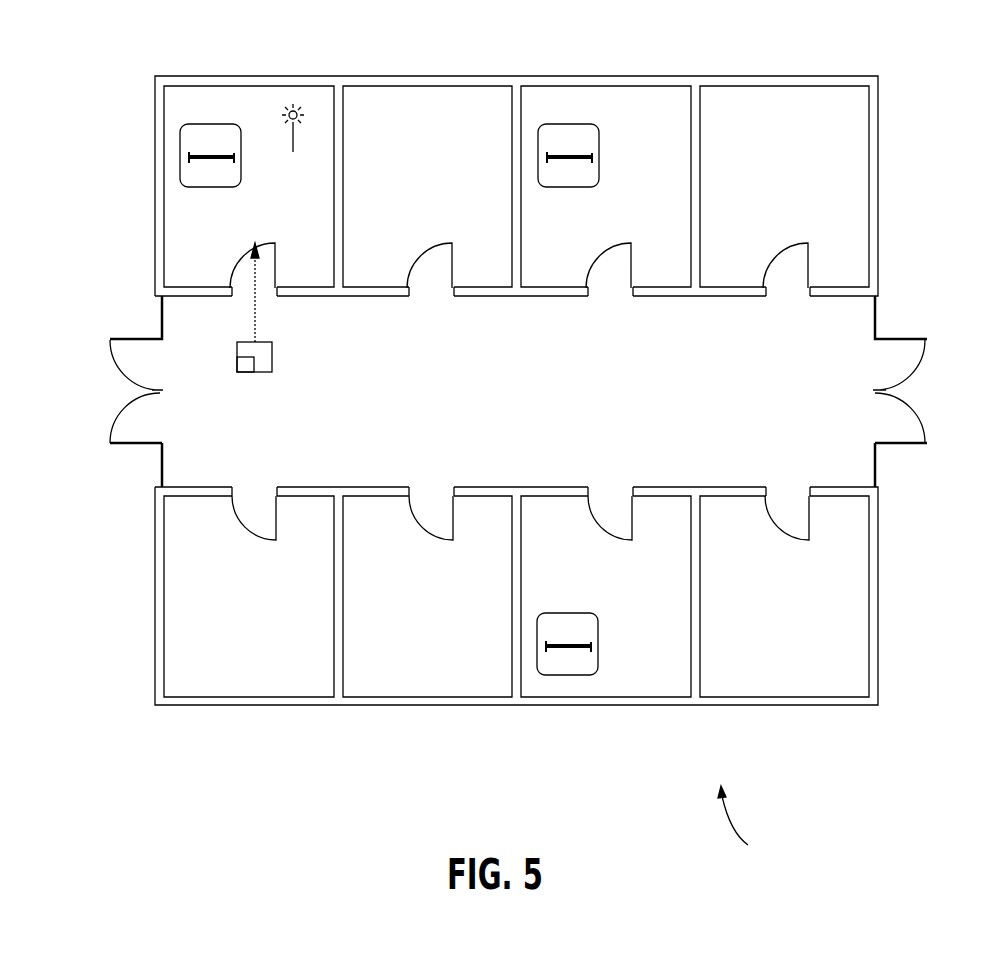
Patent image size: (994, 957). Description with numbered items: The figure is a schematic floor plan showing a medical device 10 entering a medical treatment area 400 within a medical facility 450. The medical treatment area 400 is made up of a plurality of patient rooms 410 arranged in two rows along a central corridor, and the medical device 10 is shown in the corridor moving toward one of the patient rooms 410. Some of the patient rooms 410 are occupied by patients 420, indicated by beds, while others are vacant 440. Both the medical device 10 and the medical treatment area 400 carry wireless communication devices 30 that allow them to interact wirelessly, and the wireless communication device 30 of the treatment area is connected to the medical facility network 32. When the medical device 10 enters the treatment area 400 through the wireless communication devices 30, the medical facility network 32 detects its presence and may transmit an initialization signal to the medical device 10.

The medical device 10 is at (272, 353).
The wireless communication device 30 is at (237, 367).
The medical facility network 32 is at (308, 108).
The medical treatment area 400 is at (180, 225).
The patient room 410 is at (229, 76).
The patient 420 is at (180, 147).
The vacant 440 is at (411, 177).
The medical facility 450 is at (757, 823).